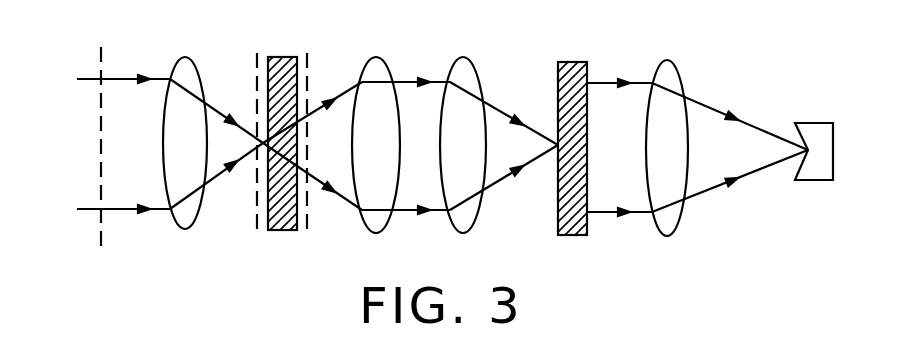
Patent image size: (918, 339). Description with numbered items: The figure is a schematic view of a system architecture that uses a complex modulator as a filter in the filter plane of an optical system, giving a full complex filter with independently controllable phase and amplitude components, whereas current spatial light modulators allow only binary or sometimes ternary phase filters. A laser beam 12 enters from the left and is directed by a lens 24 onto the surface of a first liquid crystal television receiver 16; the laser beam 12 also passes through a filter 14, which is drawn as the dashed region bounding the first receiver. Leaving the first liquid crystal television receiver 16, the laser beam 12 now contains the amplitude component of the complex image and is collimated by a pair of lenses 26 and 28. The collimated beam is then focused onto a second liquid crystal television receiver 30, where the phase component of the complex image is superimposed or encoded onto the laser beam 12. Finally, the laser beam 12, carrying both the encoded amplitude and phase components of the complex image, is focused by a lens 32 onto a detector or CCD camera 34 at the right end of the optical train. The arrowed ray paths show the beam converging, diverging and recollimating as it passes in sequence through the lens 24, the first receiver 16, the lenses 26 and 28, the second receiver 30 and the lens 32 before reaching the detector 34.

The laser beam 12 is at (160, 210).
The filter 14 is at (258, 55).
The first liquid crystal television receiver 16 is at (284, 232).
The lens 24 is at (199, 208).
The lens 26 is at (385, 220).
The lens 28 is at (479, 217).
The second liquid crystal television receiver 30 is at (577, 236).
The lens 32 is at (685, 217).
The detector or CCD camera 34 is at (815, 181).